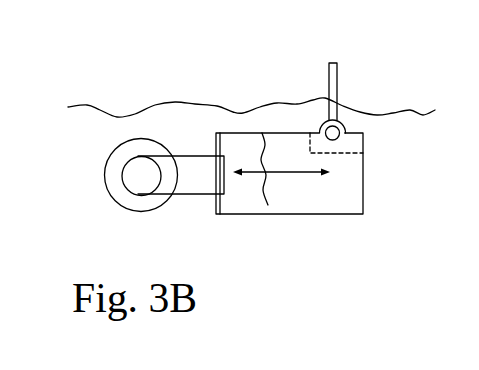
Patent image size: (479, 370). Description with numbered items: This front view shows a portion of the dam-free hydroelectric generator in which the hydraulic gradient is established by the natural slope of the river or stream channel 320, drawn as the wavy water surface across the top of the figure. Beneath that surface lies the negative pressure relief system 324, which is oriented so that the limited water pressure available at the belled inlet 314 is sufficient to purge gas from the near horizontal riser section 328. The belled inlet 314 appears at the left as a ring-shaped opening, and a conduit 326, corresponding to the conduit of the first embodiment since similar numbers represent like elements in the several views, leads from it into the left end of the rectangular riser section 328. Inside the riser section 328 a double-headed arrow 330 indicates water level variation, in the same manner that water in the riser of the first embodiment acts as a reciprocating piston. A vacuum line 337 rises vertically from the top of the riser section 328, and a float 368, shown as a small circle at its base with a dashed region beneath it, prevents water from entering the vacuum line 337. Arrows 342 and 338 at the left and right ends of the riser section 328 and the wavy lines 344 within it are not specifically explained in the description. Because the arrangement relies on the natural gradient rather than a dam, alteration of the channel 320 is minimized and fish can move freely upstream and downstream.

The river or stream channel 320 is at (108, 102).
The negative pressure relief system 324 is at (200, 140).
The belled inlet 314 is at (112, 200).
The shaft 326 is at (157, 196).
The near horizontal riser section 328 is at (307, 247).
The direction of travel 330 is at (283, 173).
The vacuum line 337 is at (338, 82).
The second end wall 338 is at (358, 206).
The first end wall 342 is at (231, 206).
The cavity wall 344 is at (247, 147).
The float 368 is at (338, 137).